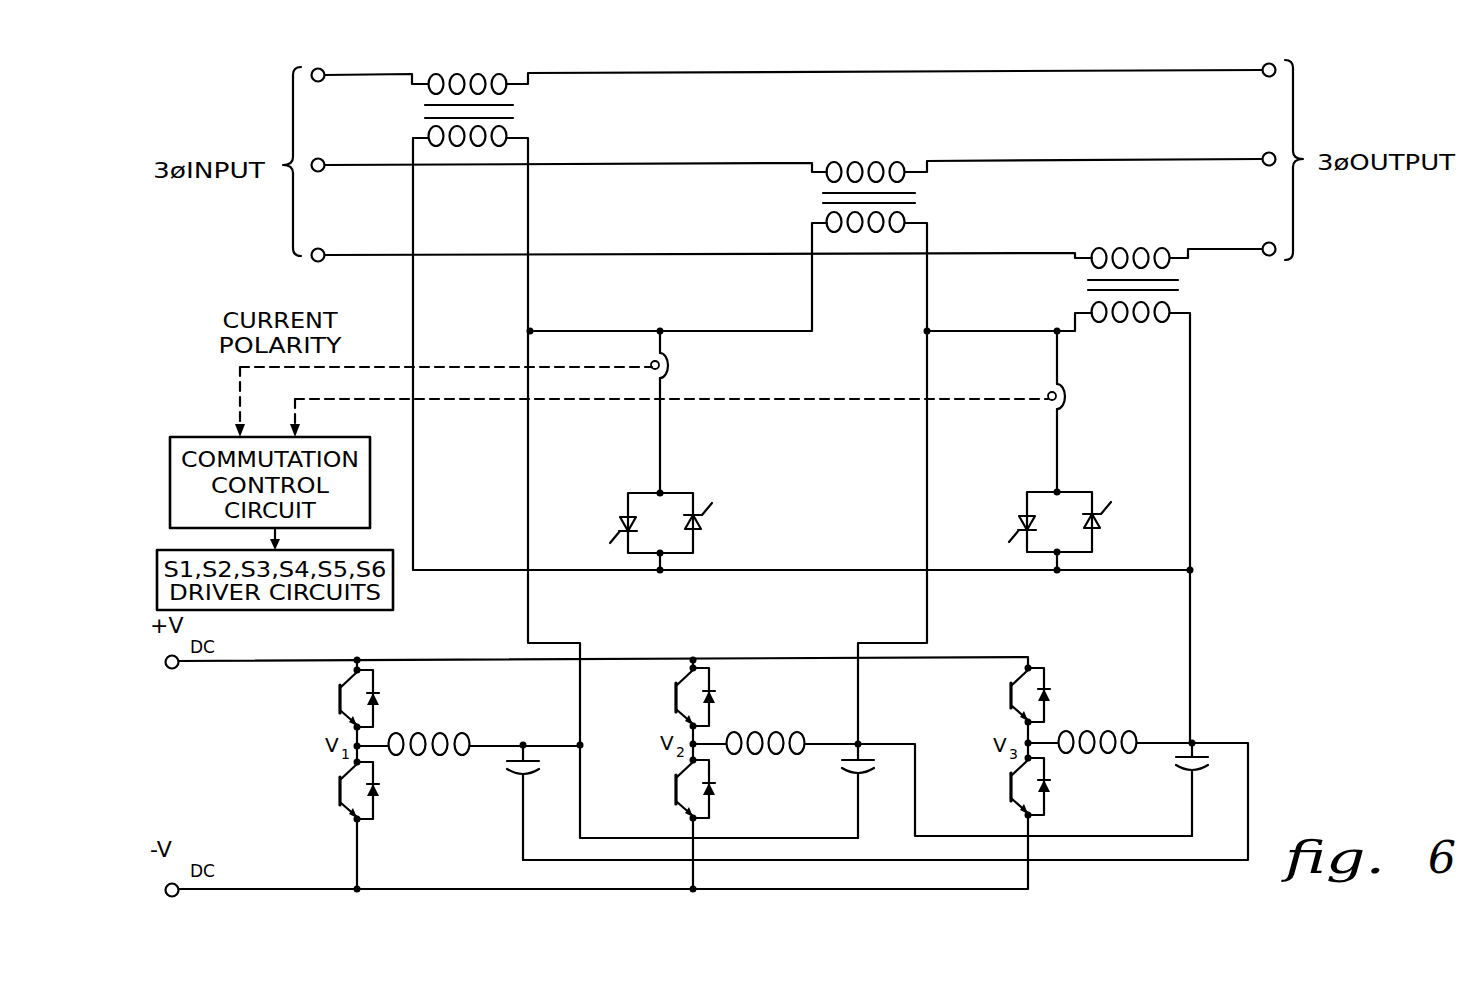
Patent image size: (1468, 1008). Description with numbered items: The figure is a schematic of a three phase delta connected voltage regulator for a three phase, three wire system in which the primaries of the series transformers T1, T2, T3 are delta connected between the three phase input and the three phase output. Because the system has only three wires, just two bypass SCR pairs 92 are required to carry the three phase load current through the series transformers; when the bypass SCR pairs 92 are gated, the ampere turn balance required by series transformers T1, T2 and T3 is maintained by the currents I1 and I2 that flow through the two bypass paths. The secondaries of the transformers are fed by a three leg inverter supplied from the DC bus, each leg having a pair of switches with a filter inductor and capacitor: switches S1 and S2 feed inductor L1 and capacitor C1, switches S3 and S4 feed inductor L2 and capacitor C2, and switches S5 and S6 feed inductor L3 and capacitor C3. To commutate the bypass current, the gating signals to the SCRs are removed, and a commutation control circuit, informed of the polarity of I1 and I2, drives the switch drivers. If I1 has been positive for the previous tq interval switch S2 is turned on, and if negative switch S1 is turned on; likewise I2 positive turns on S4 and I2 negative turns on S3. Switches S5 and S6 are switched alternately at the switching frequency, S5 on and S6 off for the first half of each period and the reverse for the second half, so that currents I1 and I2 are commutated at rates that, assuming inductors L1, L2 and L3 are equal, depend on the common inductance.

The bypass SCR pair 92 is at (620, 528).
The series transformer T1 is at (498, 110).
The series transformer T2 is at (895, 197).
The series transformer T3 is at (1159, 285).
The current I1 is at (678, 352).
The current I2 is at (1077, 383).
The switch S1 is at (340, 699).
The switch S2 is at (340, 790).
The switch S3 is at (676, 697).
The switch S4 is at (676, 789).
The switch S5 is at (1011, 695).
The switch S6 is at (1011, 786).
The inductor L1 is at (429, 729).
The inductor L2 is at (766, 728).
The inductor L3 is at (1098, 727).
The capacitor C1 is at (508, 802).
The capacitor C2 is at (843, 791).
The capacitor C3 is at (1177, 789).